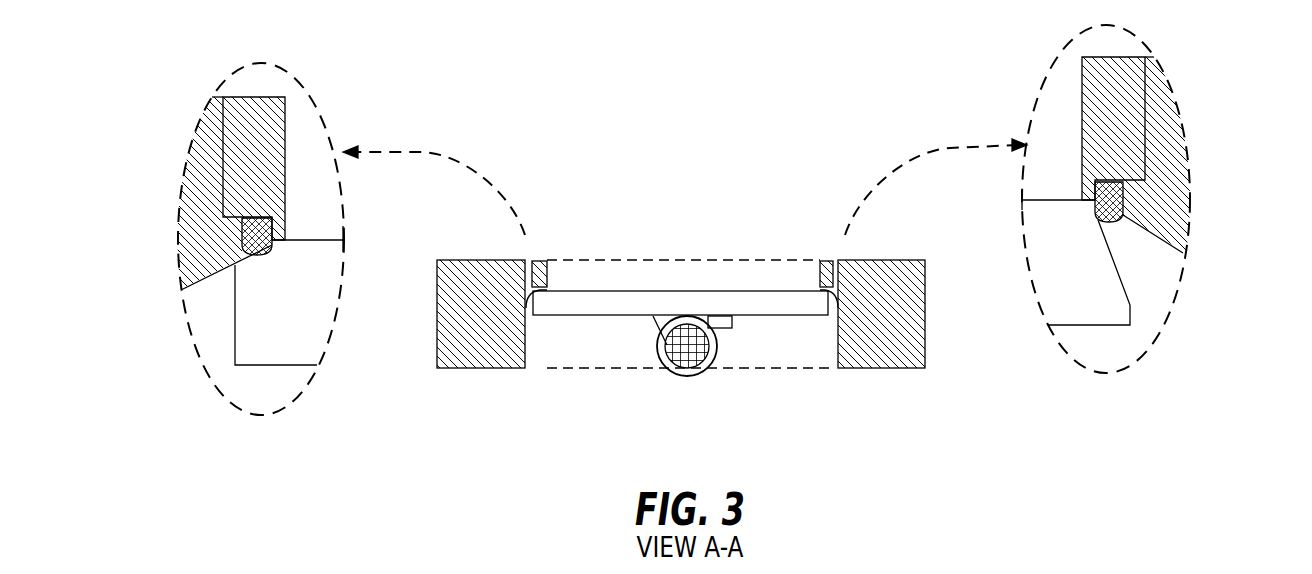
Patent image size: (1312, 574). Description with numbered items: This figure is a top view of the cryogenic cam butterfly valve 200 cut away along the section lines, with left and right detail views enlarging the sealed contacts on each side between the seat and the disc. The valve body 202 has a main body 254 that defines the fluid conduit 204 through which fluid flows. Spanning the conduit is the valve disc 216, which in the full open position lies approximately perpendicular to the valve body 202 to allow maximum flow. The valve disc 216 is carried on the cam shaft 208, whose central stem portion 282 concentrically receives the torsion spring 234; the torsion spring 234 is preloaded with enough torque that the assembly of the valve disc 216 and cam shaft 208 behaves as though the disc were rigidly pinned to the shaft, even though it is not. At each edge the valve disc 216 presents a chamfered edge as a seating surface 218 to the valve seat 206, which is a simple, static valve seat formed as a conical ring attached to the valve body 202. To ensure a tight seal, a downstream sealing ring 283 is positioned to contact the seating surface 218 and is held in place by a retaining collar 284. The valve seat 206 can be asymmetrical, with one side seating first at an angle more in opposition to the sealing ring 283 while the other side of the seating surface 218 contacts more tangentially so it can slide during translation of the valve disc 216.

The cryogenic cam butterfly valve 200 is at (574, 152).
The valve body 202 is at (205, 150).
The fluid conduit 204 is at (830, 336).
The valve seat 206 is at (207, 237).
The cam shaft 208 is at (668, 370).
The valve disc 216 is at (716, 289).
The seating surface 218 is at (236, 262).
The torsion spring 234 is at (718, 368).
The main body 254 is at (925, 352).
The central stem portion 282 is at (693, 376).
The downstream sealing ring 283 is at (273, 243).
The retaining collar 284 is at (280, 125).